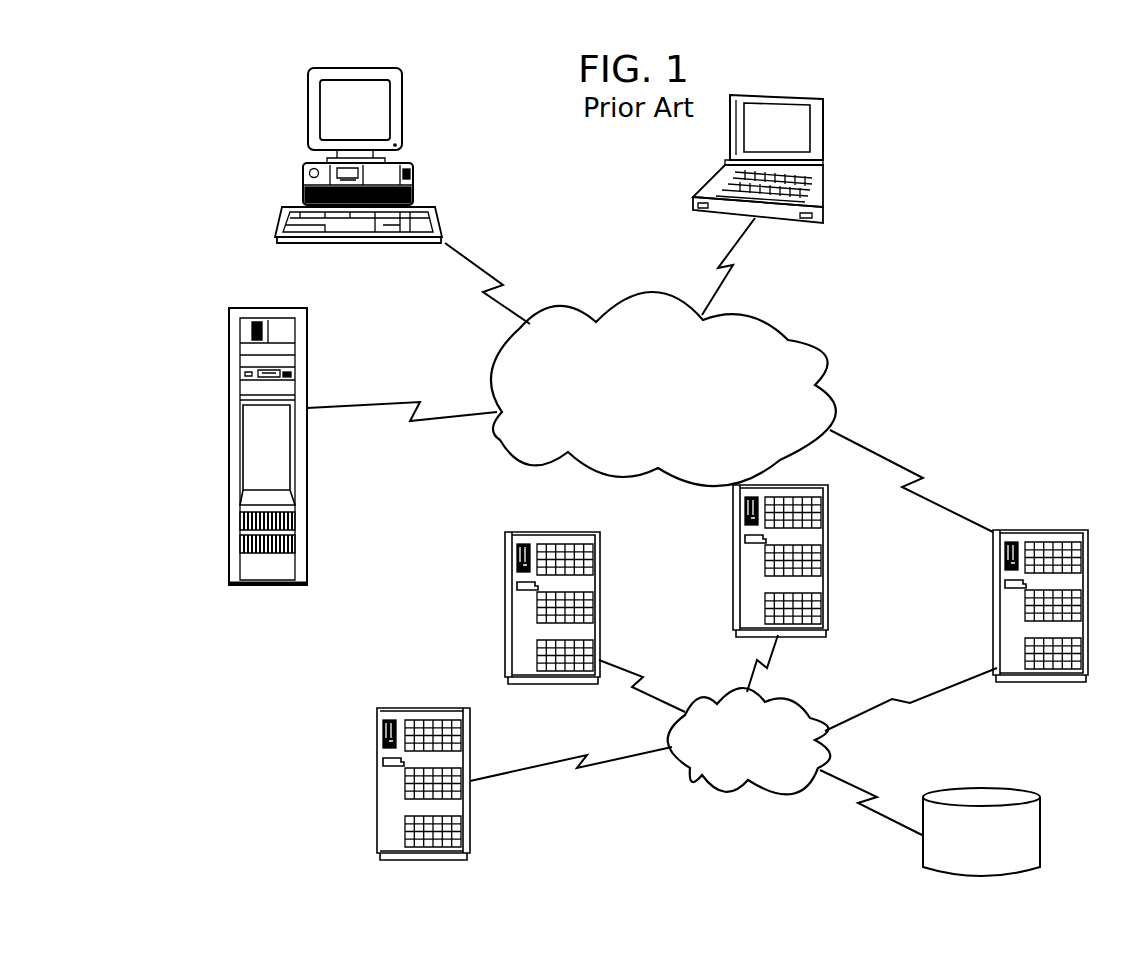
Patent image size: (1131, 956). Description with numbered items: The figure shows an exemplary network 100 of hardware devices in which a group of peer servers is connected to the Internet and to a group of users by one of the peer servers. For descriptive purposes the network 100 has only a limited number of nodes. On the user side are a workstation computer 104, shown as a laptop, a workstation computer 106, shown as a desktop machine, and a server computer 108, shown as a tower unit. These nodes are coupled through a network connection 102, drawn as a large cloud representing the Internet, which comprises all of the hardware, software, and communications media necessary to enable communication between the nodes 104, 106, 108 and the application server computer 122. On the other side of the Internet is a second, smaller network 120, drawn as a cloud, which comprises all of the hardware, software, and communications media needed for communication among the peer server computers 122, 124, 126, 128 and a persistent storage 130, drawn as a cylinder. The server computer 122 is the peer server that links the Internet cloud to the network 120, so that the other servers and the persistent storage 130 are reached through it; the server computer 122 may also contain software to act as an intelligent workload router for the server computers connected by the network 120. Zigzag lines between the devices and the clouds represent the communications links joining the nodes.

The network 100 is at (204, 189).
The network connection 102 is at (663, 389).
The workstation computer 104 is at (824, 151).
The workstation computer 106 is at (403, 122).
The server computer 108 is at (229, 353).
The network 120 is at (749, 741).
The server computer 122 is at (1050, 531).
The server computer 124 is at (830, 557).
The server computer 126 is at (599, 595).
The server computer 128 is at (377, 760).
The persistent storage 130 is at (1003, 855).